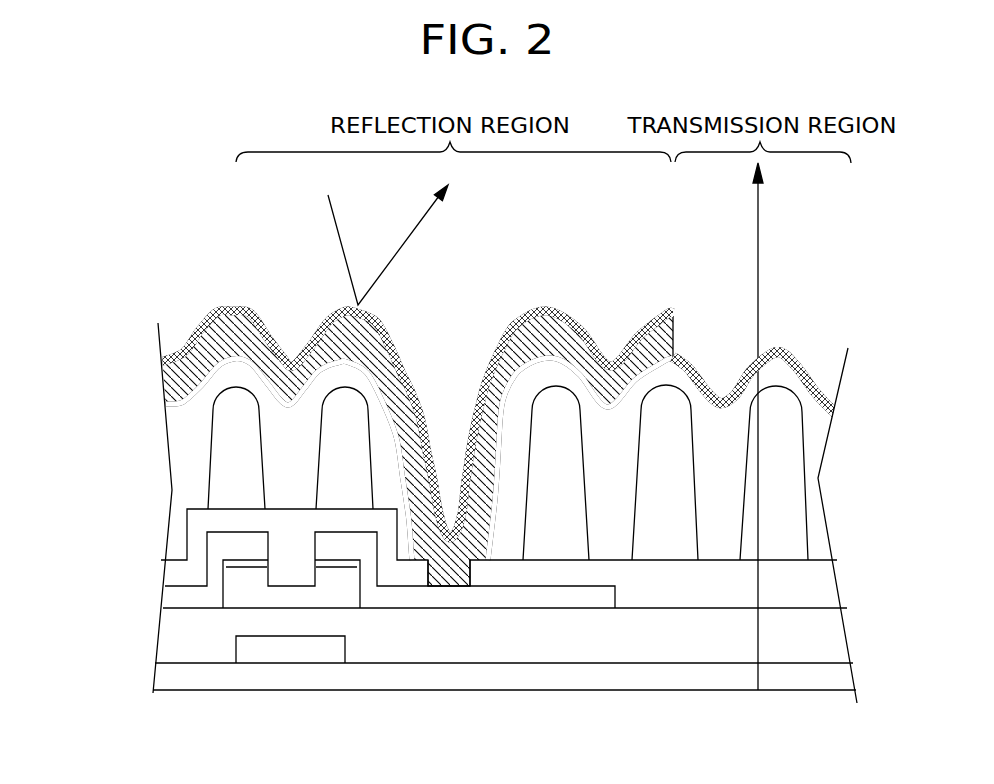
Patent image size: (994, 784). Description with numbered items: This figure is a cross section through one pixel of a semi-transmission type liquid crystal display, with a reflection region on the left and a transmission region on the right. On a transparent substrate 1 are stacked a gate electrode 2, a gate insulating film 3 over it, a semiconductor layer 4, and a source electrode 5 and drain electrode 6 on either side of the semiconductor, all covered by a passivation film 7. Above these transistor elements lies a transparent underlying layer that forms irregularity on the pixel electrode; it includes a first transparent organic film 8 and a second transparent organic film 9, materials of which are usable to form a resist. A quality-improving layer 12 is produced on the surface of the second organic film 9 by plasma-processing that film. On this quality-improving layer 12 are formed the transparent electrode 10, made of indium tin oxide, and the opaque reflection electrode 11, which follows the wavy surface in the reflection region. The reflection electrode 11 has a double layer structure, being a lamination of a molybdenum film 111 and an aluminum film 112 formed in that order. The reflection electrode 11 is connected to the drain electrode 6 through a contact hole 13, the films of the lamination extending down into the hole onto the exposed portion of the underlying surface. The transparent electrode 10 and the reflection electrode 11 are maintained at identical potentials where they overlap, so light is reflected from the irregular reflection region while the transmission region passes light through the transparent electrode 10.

The transparent substrate 1 is at (820, 678).
The gate electrode 2 is at (267, 655).
The gate insulating film 3 is at (820, 638).
The semiconductor layer 4 is at (334, 598).
The source electrode 5 is at (172, 598).
The drain electrode 6 is at (568, 598).
The passivation film 7 is at (815, 577).
The first transparent organic film 8 is at (780, 508).
The second transparent organic film 9 is at (805, 440).
The transparent electrode 10 is at (797, 355).
The reflection electrode 11 is at (80, 332).
The molybdenum film 111 is at (163, 358).
The aluminum film 112 is at (177, 388).
The quality-improving layer 12 is at (718, 395).
The contact hole 13 is at (441, 578).